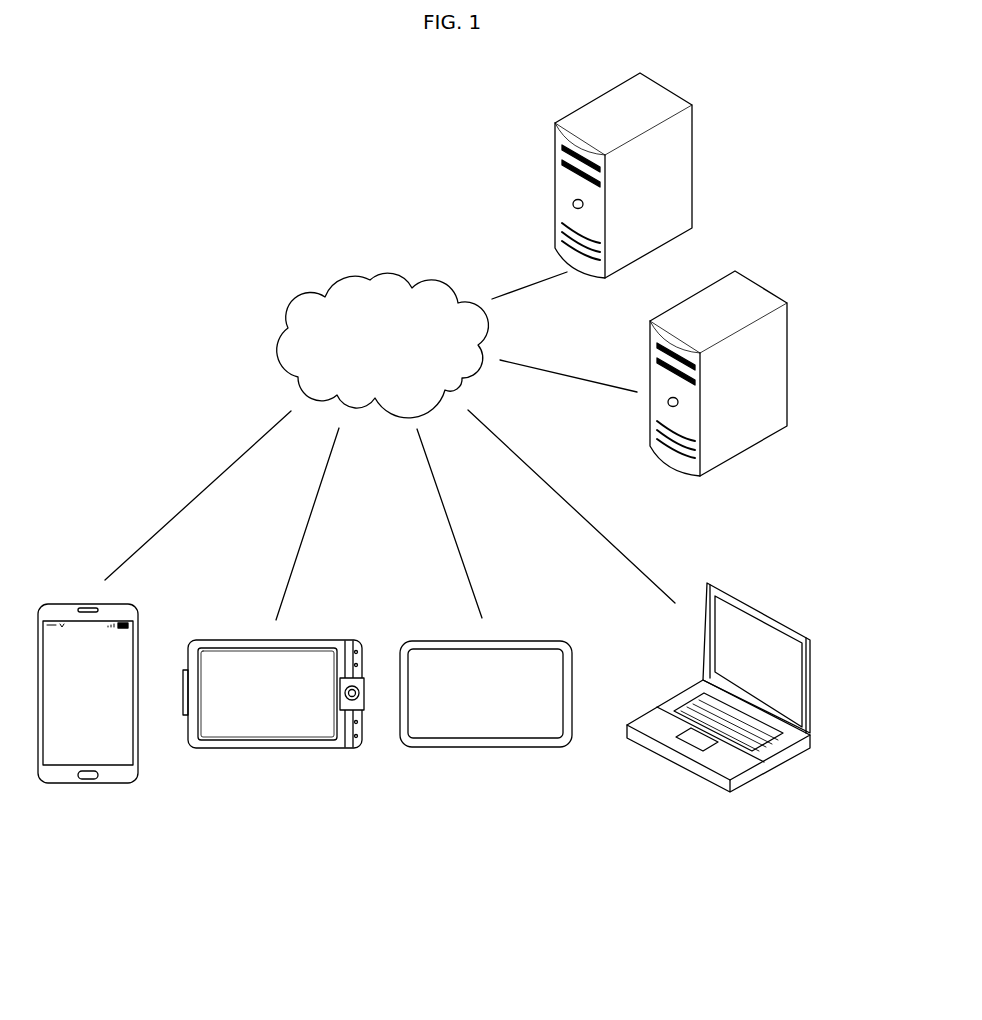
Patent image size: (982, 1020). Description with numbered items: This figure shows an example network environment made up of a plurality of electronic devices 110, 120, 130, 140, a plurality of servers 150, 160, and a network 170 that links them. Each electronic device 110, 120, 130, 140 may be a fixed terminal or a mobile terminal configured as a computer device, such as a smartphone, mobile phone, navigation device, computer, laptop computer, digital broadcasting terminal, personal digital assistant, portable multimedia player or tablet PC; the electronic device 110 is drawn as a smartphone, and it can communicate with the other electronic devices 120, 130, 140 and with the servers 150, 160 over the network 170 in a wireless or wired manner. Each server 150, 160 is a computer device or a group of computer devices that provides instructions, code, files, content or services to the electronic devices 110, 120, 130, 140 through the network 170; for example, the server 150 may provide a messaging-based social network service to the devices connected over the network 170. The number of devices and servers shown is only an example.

The electronic device 110 is at (89, 784).
The electronic device 120 is at (274, 748).
The electronic device 130 is at (485, 747).
The electronic device 140 is at (810, 688).
The server 150 is at (787, 363).
The server 160 is at (692, 167).
The network 170 is at (390, 274).